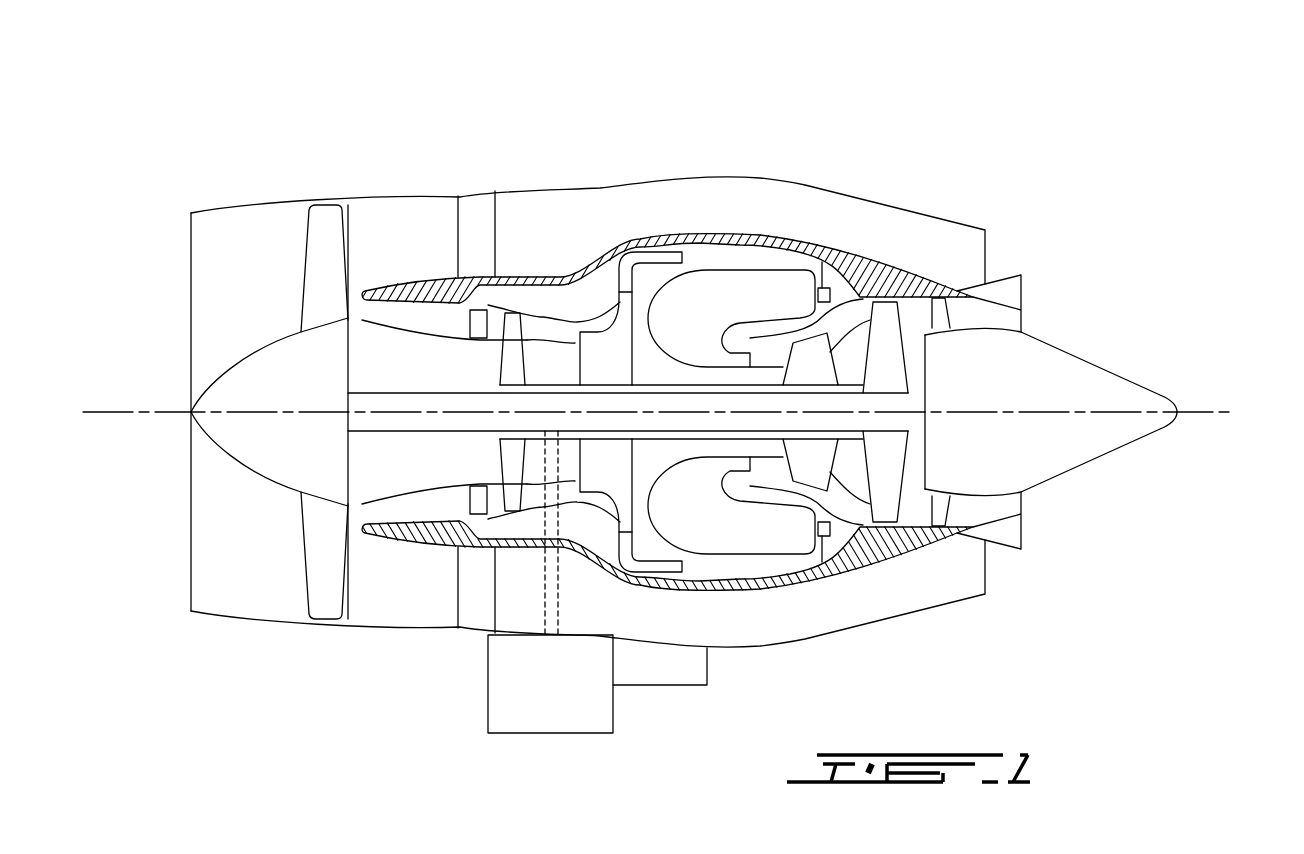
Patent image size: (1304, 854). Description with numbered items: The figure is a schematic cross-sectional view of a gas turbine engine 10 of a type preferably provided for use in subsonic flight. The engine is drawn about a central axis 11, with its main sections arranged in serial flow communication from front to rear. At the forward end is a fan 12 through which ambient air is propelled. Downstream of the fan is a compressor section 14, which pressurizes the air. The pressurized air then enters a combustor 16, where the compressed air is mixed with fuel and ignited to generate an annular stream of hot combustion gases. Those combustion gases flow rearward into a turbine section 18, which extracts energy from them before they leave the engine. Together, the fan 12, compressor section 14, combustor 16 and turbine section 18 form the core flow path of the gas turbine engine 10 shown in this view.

The gas turbine engine 10 is at (866, 135).
The central longitudinal axis 11 is at (1210, 412).
The fan 12 is at (322, 545).
The compressor section 14 is at (542, 323).
The combustor 16 is at (722, 297).
The turbine section 18 is at (848, 457).